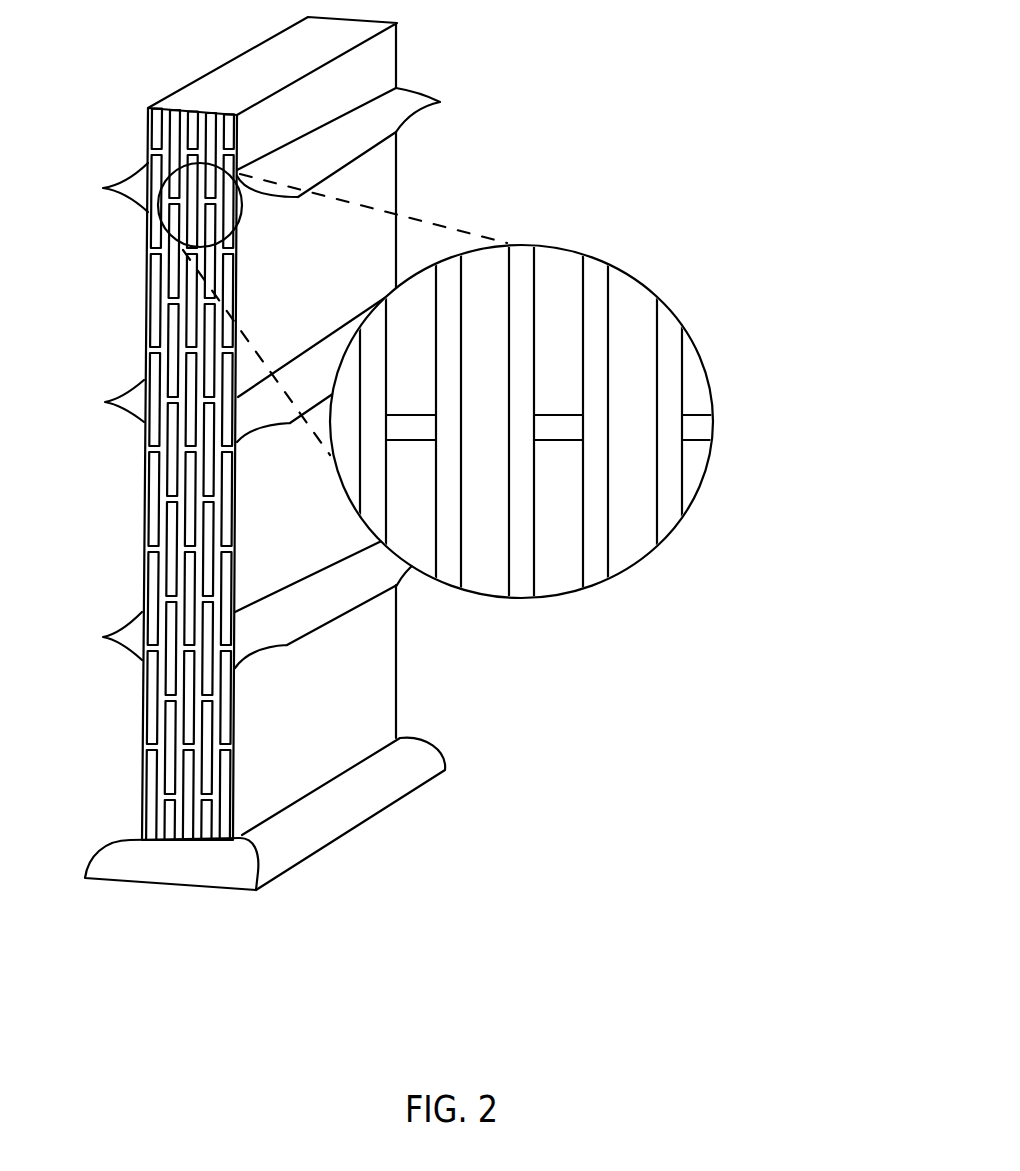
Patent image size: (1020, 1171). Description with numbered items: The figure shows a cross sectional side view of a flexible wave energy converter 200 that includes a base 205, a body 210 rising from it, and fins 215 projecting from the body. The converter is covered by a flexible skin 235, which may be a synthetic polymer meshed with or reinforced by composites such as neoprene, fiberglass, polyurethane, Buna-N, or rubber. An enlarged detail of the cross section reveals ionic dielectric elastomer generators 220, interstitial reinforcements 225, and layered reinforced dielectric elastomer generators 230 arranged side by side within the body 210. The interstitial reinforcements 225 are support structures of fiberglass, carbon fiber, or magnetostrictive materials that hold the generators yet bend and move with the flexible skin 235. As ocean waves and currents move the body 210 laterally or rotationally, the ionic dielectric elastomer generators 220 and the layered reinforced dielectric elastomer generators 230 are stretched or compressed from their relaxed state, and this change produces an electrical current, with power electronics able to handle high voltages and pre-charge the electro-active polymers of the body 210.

The flexible wave energy converter 200 is at (130, 951).
The base 205 is at (360, 830).
The body 210 is at (333, 271).
The fins 215 is at (415, 93).
The ionic dielectric elastomer generators 220 is at (627, 346).
The interstitial reinforcements 225 is at (660, 350).
The layered reinforced dielectric elastomer generators 230 is at (517, 561).
The flexible skin 235 is at (143, 253).